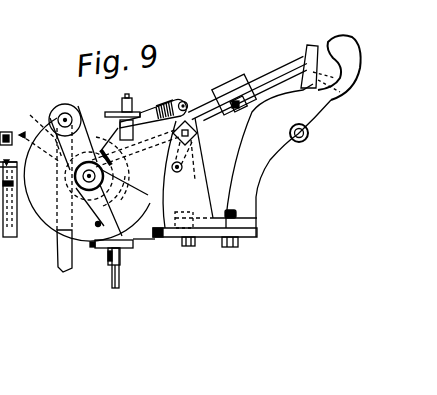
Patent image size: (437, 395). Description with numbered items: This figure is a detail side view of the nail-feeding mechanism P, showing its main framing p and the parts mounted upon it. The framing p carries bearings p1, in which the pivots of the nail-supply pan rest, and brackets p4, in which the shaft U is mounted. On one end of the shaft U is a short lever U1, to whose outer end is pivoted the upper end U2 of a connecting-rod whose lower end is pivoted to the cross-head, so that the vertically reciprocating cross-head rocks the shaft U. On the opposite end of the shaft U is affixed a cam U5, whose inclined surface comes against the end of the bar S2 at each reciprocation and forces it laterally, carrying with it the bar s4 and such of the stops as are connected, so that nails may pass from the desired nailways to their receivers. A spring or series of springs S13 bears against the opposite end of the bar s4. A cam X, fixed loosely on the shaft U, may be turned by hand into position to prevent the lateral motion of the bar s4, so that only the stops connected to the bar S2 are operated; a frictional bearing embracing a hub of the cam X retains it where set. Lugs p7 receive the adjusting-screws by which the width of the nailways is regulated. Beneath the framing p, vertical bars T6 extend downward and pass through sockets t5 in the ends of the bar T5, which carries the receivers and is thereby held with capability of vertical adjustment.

The cam X is at (87, 179).
The shaft U is at (86, 122).
The short lever U1 is at (40, 129).
The upper end of connecting-rod U2 is at (59, 107).
The cam U5 is at (9, 253).
The bar S2 is at (103, 130).
The spring S13 is at (153, 117).
The bar s4 is at (6, 126).
The main framing p is at (269, 156).
The nail-feeding mechanism P is at (242, 158).
The bearings p1 is at (357, 55).
The brackets p4 is at (184, 158).
The lugs p7 is at (242, 114).
The bar T5 is at (134, 246).
The vertical bars T6 is at (121, 266).
The sockets t5 is at (108, 254).